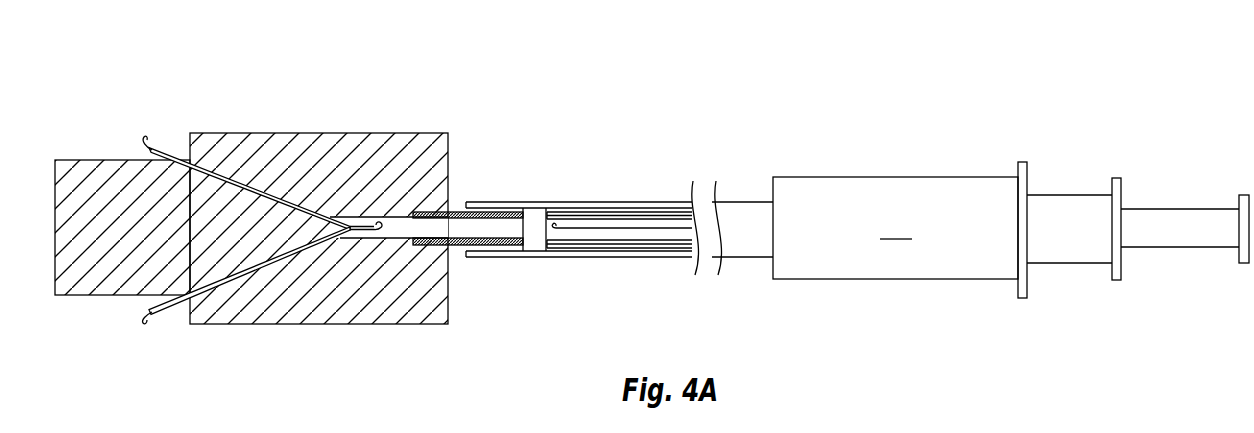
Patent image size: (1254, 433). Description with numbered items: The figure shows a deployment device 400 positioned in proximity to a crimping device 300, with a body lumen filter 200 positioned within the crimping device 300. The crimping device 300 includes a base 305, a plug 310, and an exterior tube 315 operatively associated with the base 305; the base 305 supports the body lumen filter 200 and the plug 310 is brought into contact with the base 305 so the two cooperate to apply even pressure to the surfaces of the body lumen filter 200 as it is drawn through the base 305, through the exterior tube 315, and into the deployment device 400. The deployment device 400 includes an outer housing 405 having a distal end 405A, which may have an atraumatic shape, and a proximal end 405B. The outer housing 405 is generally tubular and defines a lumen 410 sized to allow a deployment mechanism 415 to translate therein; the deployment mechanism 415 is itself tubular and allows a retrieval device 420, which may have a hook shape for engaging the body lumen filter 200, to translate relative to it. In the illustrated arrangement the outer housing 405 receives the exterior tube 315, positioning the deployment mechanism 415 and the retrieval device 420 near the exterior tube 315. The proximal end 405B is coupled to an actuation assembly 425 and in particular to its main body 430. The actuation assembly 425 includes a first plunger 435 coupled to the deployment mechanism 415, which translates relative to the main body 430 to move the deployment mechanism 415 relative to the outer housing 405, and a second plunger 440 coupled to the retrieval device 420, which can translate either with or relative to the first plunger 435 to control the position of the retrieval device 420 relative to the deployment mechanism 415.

The body lumen filter 200 is at (162, 146).
The crimping device 300 is at (245, 183).
The base 305 is at (393, 140).
The plug 310 is at (97, 168).
The exterior tube 315 is at (462, 202).
The deployment device 400 is at (831, 207).
The outer housing 405 is at (652, 201).
The distal end 405A is at (493, 197).
The proximal end 405B is at (747, 262).
The lumen 410 is at (537, 228).
The deployment mechanism 415 is at (620, 201).
The retrieval device 420 is at (615, 231).
The actuation assembly 425 is at (900, 196).
The main body 430 is at (896, 229).
The first plunger 435 is at (1065, 195).
The second plunger 440 is at (1168, 209).